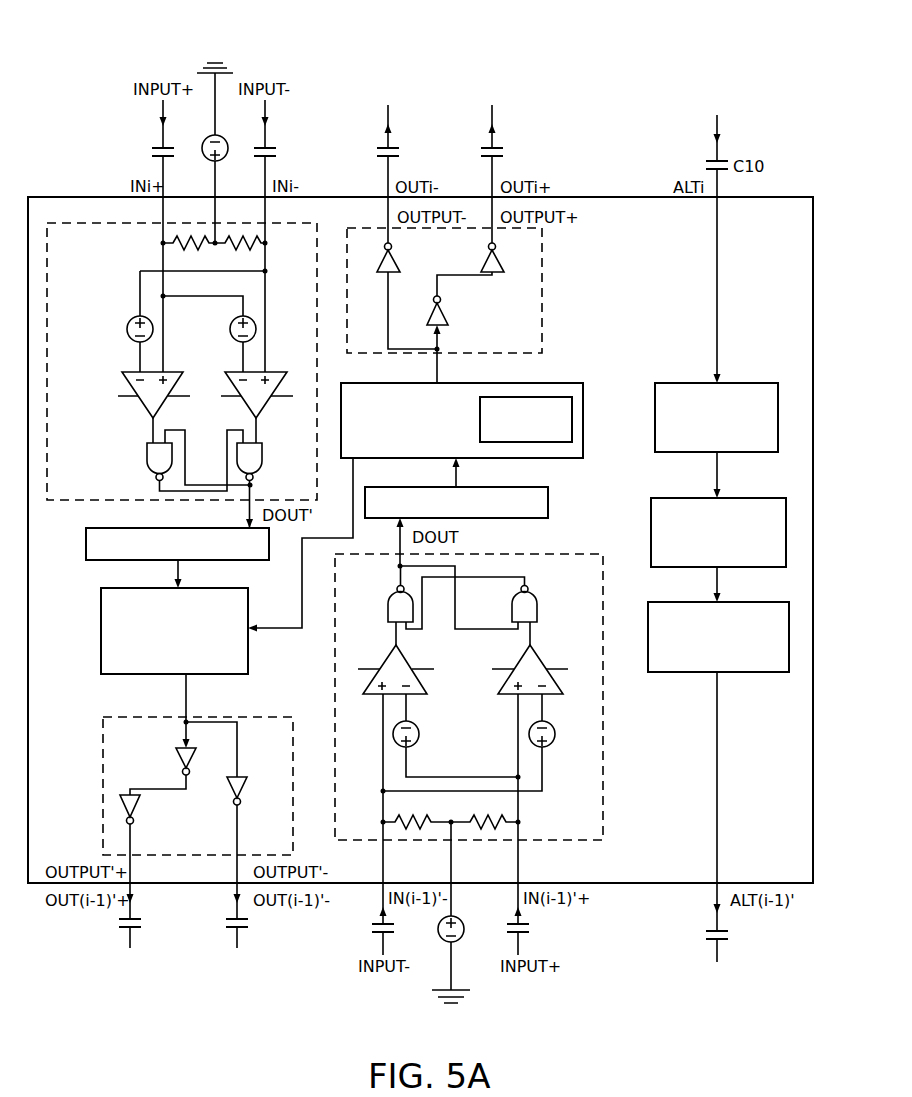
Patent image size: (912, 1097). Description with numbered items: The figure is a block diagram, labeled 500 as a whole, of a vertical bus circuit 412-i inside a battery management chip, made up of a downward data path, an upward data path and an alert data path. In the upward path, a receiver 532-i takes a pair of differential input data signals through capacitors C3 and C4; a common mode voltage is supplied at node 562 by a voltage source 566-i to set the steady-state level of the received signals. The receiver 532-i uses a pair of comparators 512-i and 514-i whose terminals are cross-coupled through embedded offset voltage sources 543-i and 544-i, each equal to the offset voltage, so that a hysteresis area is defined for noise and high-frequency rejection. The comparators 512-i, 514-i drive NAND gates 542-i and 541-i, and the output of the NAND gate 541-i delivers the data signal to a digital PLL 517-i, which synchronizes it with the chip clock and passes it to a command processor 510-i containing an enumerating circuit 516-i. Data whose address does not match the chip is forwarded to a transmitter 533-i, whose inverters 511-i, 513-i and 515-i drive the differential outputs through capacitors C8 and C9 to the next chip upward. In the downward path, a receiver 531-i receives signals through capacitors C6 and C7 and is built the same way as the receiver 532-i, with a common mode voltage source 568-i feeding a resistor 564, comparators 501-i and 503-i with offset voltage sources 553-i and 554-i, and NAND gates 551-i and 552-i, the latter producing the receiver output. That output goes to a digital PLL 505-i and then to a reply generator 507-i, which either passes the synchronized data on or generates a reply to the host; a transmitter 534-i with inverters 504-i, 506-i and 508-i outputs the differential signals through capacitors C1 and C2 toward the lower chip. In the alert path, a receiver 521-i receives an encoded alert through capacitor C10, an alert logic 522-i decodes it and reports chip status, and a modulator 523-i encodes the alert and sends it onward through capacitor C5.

The device circuit 500 is at (104, 118).
The vertical bus circuit 412-i is at (757, 197).
The common mode voltage source 568-i is at (204, 140).
The receiver 531-i is at (325, 216).
The resistor 564 is at (214, 251).
The offset voltage source 554-i is at (128, 334).
The offset voltage source 553-i is at (232, 328).
The comparator 501-i is at (176, 386).
The comparator 503-i is at (300, 398).
The NAND gate 551-i is at (147, 454).
The NAND gate 552-i is at (262, 452).
The digital phase-locked loop 505-i is at (177, 544).
The reply generator 507-i is at (174, 631).
The transmitter 534-i is at (232, 717).
The inverter 504-i is at (181, 757).
The inverter 506-i is at (140, 805).
The inverter 508-i is at (245, 785).
The transmitter 533-i is at (543, 243).
The inverter 513-i is at (379, 263).
The inverter 515-i is at (483, 263).
The inverter 511-i is at (446, 312).
The command processor 510-i is at (487, 420).
The enumerating circuit 516-i is at (583, 400).
The digital phase-locked loop 517-i is at (456, 502).
The receiver 532-i is at (603, 694).
The NAND gate 541-i is at (388, 598).
The NAND gate 542-i is at (553, 592).
The comparator 514-i is at (385, 658).
The comparator 512-i is at (517, 667).
The voltage source 543-i is at (419, 738).
The voltage source 544-i is at (555, 738).
The node 562 is at (451, 813).
The voltage source 566-i is at (464, 934).
The receiver 521-i is at (716, 417).
The alert logic 522-i is at (718, 532).
The modulator 523-i is at (718, 637).
The capacitor C1 is at (119, 925).
The capacitor C2 is at (225, 925).
The capacitor C3 is at (371, 929).
The capacitor C4 is at (532, 929).
The capacitor C5 is at (731, 937).
The capacitor C6 is at (151, 152).
The capacitor C7 is at (279, 152).
The capacitor C8 is at (401, 152).
The capacitor C9 is at (505, 152).
The capacitor C10 is at (717, 165).